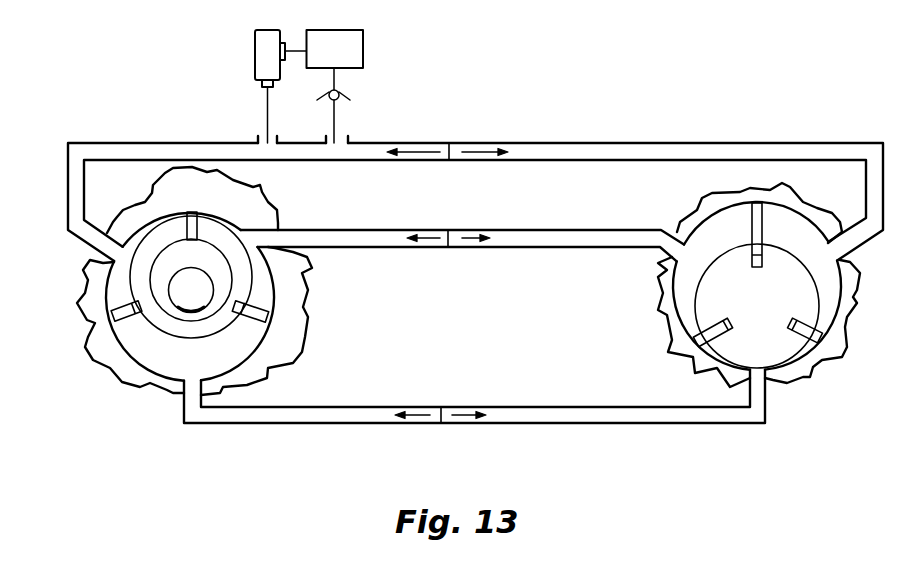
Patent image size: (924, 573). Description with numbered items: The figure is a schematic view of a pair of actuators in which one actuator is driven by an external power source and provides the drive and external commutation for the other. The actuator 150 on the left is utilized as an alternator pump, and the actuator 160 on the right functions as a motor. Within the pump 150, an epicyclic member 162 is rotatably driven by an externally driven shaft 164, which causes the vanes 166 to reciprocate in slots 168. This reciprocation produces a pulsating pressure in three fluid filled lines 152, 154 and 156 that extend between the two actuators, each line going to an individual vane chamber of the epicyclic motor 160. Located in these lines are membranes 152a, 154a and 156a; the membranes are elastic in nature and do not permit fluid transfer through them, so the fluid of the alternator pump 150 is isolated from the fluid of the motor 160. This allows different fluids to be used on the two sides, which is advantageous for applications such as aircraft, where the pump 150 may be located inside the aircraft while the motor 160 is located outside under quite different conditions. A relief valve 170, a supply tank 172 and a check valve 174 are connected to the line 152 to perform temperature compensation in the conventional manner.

The actuator 150 is at (138, 356).
The fluid filled line 152 is at (365, 155).
The membrane 152a is at (455, 143).
The fluid filled line 154 is at (374, 248).
The membrane 154a is at (460, 230).
The fluid filled line 156 is at (319, 408).
The membrane 156a is at (443, 408).
The actuator 160 is at (843, 297).
The epicyclic member 162 is at (165, 223).
The externally driven shaft 164 is at (210, 301).
The vane 166 is at (253, 320).
The slot 168 is at (258, 307).
The relief valve 170 is at (255, 79).
The supply tank 172 is at (366, 61).
The check valve 174 is at (345, 98).